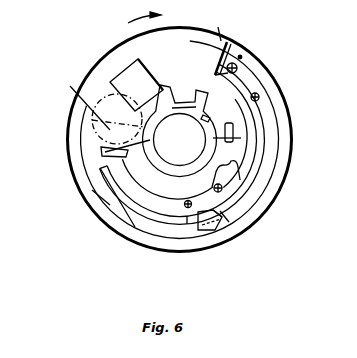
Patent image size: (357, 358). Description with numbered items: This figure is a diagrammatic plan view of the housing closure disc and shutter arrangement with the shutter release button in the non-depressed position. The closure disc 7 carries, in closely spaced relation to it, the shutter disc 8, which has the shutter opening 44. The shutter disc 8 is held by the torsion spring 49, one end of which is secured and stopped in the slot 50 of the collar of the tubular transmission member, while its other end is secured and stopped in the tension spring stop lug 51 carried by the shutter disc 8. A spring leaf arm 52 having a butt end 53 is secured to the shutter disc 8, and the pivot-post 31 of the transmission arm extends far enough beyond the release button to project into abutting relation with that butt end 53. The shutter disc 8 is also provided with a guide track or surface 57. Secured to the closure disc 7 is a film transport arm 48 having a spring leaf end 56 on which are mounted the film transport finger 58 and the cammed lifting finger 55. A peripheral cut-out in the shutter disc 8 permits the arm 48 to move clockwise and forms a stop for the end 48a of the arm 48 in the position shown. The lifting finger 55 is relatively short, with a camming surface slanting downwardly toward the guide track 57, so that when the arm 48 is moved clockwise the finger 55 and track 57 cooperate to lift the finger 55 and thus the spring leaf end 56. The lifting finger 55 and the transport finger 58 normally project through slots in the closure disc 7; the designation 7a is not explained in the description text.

The closure disc 7 is at (284, 157).
The housing opening 7a is at (114, 104).
The shutter disc 8 is at (218, 26).
The pivot-post 31 is at (101, 154).
The shutter opening 44 is at (128, 70).
The film transport arm 48 is at (260, 170).
The end of the arm 48a is at (224, 66).
The torsion spring 49 is at (241, 138).
The slot 50 is at (260, 99).
The tension spring stop lug 51 is at (234, 129).
The spring leaf arm 52 is at (127, 207).
The butt end 53 is at (78, 105).
The cammed lifting finger 55 is at (200, 222).
The spring leaf end 56 is at (228, 216).
The guide track 57 is at (140, 192).
The film transport finger 58 is at (221, 216).